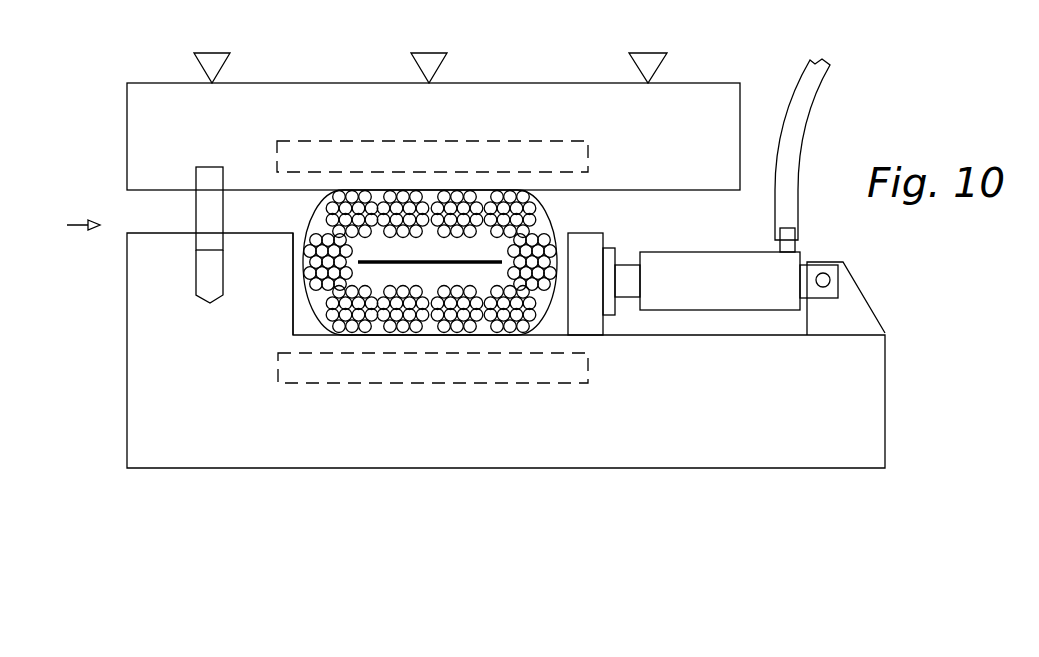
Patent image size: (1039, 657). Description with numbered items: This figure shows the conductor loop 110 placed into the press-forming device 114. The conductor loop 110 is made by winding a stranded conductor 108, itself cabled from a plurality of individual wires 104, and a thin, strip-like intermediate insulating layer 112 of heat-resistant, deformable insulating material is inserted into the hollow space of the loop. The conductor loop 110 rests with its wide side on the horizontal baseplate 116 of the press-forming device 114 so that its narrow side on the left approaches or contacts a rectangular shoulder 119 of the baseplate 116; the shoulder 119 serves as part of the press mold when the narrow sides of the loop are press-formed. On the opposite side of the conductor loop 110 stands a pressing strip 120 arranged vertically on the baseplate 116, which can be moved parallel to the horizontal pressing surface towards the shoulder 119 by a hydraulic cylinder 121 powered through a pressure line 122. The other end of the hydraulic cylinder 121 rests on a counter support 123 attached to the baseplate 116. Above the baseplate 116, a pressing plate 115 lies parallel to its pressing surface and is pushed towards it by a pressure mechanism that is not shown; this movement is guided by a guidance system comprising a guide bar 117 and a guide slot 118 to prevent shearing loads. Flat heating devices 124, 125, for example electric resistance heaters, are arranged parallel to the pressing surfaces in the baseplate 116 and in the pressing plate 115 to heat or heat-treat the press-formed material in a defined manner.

The individual wire 104 is at (468, 322).
The stranded conductor 108 is at (517, 193).
The conductor loop 110 is at (432, 280).
The intermediate insulating layer 112 is at (448, 260).
The press-forming device 114 is at (52, 223).
The pressing plate 115 is at (695, 153).
The baseplate 116 is at (769, 425).
The guide bar 117 is at (207, 208).
The guide slot 118 is at (207, 275).
The rectangular shoulder 119 is at (290, 267).
The pressing strip 120 is at (592, 318).
The hydraulic cylinder 121 is at (737, 297).
The pressure line 122 is at (810, 93).
The counter support 123 is at (855, 317).
The flat heating device 124 is at (318, 368).
The flat heating device 125 is at (342, 152).